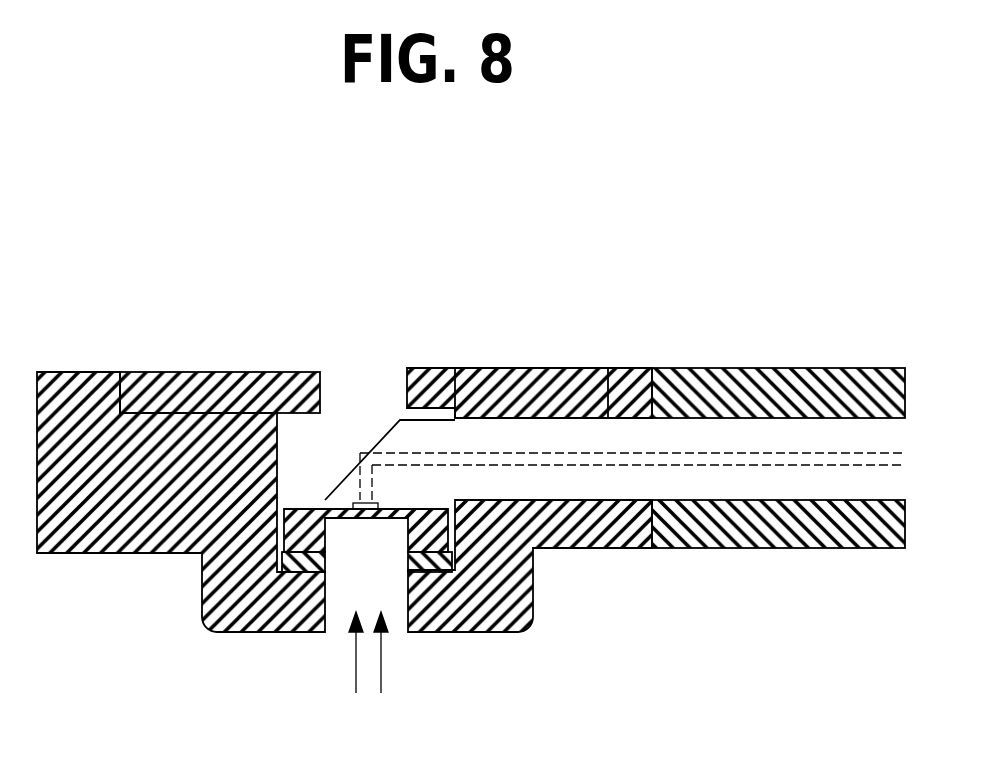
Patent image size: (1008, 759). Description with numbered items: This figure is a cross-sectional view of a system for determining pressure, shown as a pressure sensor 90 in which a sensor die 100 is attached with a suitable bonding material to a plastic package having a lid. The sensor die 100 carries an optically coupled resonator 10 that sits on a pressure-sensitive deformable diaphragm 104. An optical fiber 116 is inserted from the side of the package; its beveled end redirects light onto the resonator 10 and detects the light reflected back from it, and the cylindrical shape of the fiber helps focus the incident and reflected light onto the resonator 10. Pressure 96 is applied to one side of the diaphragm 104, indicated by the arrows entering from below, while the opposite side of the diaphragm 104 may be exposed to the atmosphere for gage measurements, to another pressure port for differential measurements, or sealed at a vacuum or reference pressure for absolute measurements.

The pressure sensor 90 is at (172, 268).
The optically coupled resonator 10 is at (356, 503).
The optical fiber 116 is at (442, 420).
The sensor die 100 is at (358, 518).
The pressure-sensitive deformable diaphragm 104 is at (327, 547).
The pressure 96 is at (383, 665).